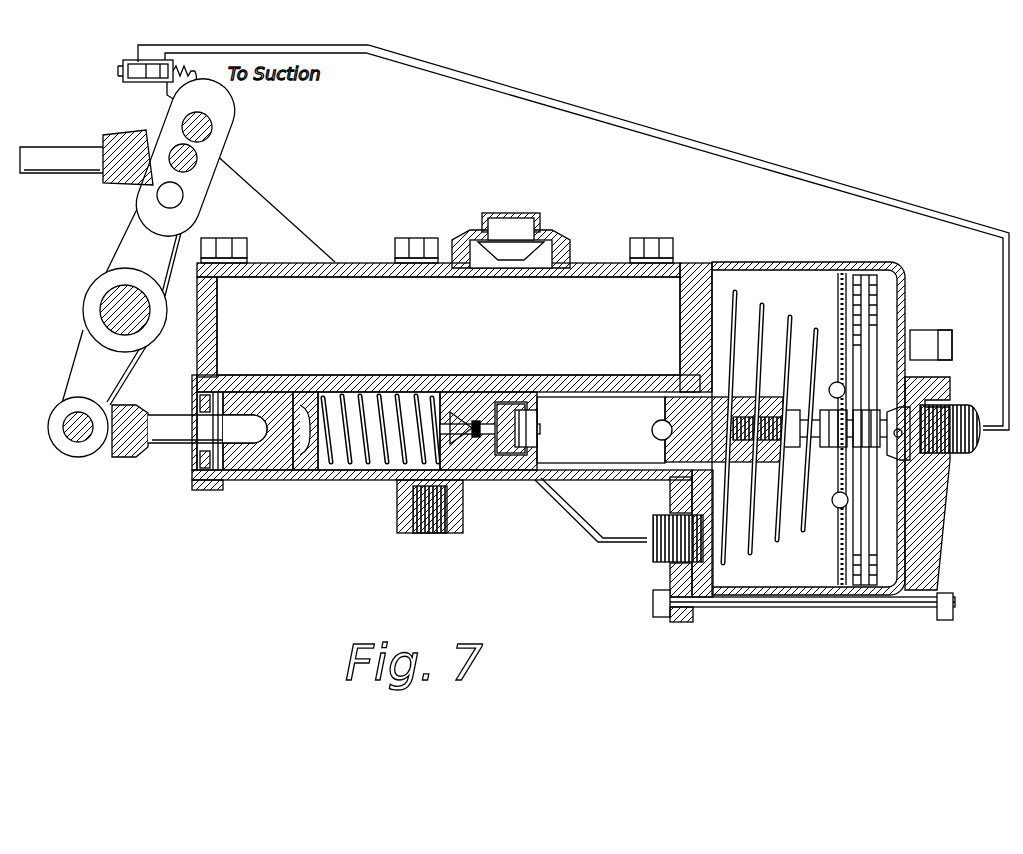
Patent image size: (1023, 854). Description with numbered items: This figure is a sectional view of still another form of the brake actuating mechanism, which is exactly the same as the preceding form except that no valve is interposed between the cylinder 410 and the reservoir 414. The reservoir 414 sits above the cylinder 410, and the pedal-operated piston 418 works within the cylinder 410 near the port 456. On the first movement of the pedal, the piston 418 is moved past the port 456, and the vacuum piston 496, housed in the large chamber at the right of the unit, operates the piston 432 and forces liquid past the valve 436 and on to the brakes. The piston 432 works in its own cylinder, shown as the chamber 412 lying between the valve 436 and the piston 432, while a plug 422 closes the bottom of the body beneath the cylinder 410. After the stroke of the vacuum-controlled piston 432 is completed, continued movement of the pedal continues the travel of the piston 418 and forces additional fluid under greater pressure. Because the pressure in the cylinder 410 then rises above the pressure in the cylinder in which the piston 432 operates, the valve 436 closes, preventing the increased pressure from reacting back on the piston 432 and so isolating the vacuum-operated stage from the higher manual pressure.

The reservoir 414 is at (378, 300).
The port 456 is at (325, 388).
The piston 418 is at (267, 456).
The cylinder 410 is at (380, 462).
The valve 436 is at (466, 467).
The drain plug 422 is at (445, 530).
The chamber 412 is at (600, 450).
The piston 432 is at (700, 453).
The vacuum piston 496 is at (840, 275).